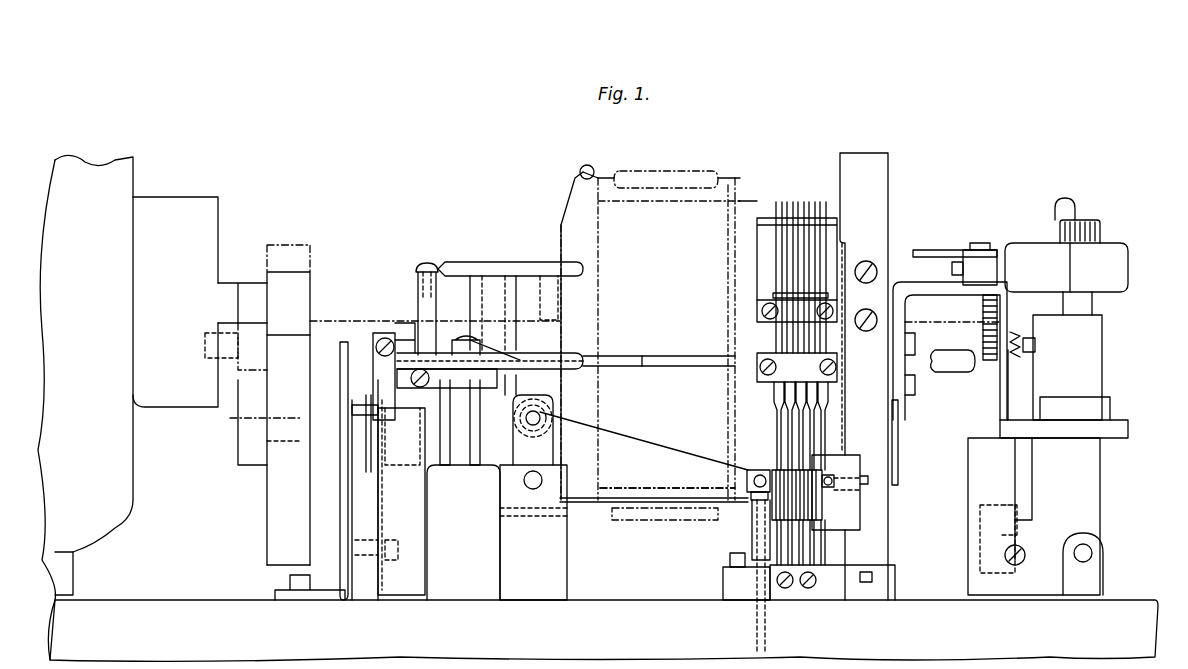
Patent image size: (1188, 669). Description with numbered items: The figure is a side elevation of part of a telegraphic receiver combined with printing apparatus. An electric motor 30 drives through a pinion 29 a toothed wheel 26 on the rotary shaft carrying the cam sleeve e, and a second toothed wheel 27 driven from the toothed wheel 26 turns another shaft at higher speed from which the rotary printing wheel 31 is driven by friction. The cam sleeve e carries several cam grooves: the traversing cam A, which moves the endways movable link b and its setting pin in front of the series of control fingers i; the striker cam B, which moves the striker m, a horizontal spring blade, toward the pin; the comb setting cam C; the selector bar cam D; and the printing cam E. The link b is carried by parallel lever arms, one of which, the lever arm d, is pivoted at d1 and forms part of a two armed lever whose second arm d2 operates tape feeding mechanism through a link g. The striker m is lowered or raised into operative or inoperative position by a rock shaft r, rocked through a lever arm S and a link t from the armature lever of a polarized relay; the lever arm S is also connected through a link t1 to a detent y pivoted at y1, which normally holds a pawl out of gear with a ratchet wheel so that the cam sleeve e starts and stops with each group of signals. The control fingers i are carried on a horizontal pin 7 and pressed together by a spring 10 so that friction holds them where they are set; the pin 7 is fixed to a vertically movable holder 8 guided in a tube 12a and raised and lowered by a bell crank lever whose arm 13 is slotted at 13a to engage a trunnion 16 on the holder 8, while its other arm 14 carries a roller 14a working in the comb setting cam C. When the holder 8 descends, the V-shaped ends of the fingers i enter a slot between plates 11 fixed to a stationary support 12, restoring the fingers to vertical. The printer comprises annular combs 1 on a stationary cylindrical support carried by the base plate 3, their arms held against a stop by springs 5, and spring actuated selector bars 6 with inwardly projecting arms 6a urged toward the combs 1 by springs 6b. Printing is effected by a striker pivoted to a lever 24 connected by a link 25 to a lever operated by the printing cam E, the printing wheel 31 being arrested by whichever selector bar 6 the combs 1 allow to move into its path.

The annular combs 1 is at (793, 202).
The frame or base plate 3 is at (604, 630).
The springs 5 is at (650, 498).
The selector bars 6 is at (640, 196).
The inwardly projecting arms 6a is at (582, 332).
The selector bar springs 6b is at (650, 182).
The horizontal pin 7 is at (868, 480).
The holder 8 is at (748, 530).
The spring 10 is at (836, 462).
The plates 11 is at (830, 538).
The stationary support 12 is at (888, 578).
The tube 12a is at (728, 570).
The slotted arm of bell crank lever 13 is at (648, 442).
The slot 13a is at (742, 482).
The unslotted arm of bell crank lever 14 is at (513, 440).
The roller 14a is at (541, 416).
The trunnion portion 16 is at (758, 468).
The lever 24 is at (974, 264).
The link 25 is at (505, 262).
The toothed wheel 26 is at (306, 549).
The toothed wheel 27 is at (288, 430).
The pinion 29 is at (288, 290).
The electric motor 30 is at (128, 407).
The rotary printing wheel 31 is at (982, 310).
The traversing cam A is at (453, 432).
The striker cam B is at (401, 501).
The comb setting cam C is at (533, 423).
The selector bar cam D is at (484, 431).
The printing cam E is at (463, 532).
The lever arm S is at (382, 371).
The link b is at (668, 360).
The lever arm d is at (978, 392).
The pivot d1 is at (975, 430).
The second arm d2 is at (1059, 515).
The cam sleeve e is at (480, 391).
The link g is at (1128, 428).
The control fingers i is at (792, 432).
The striker m is at (630, 358).
The rock shaft r is at (578, 362).
The link t is at (348, 405).
The link t1 is at (368, 425).
The detent y is at (367, 490).
The pivot y1 is at (392, 548).